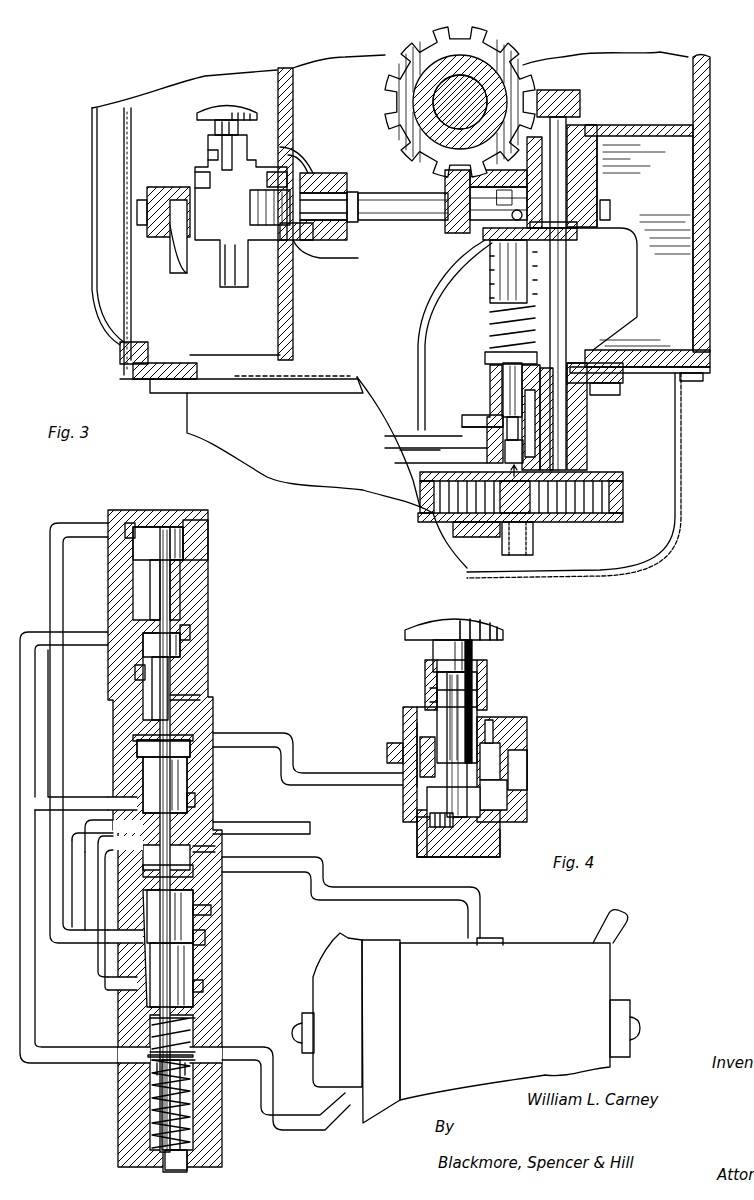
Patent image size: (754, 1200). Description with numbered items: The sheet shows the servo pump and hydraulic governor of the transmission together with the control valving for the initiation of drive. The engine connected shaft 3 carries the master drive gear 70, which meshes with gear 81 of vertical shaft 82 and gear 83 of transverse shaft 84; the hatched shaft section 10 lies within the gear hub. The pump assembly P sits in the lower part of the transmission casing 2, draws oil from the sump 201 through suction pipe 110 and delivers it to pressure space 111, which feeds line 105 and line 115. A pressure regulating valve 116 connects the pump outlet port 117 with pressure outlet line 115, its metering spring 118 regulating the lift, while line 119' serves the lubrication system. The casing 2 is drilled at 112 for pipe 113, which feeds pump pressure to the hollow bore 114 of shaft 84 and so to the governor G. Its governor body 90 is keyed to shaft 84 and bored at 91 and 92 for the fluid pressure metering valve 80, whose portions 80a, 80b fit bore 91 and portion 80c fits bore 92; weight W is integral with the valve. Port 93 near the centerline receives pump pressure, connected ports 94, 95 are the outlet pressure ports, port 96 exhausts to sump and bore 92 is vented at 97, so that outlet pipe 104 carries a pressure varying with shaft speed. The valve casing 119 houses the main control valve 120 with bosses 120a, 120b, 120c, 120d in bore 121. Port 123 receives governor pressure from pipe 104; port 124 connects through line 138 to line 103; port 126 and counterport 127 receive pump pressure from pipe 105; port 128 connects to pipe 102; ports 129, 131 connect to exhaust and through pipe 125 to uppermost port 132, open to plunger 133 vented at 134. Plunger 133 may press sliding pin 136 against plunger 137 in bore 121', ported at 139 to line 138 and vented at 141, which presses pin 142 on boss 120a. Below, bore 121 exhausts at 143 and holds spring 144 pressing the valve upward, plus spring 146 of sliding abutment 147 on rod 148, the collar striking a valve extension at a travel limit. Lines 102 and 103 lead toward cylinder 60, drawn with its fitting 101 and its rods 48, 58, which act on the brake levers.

In FIG. 3, the transmission casing 2 is at (700, 165).
In FIG. 3, the engine connected shaft 3 is at (420, 88).
In FIG. 3, the shaft 10 is at (445, 115).
In FIG. 3, the master drive gear 70 is at (480, 38).
In FIG. 3, the fluid pressure metering valve 80 is at (232, 105).
In FIG. 4, the fluid pressure metering valve 80 is at (470, 823).
In FIG. 3, the valve portion 80a is at (237, 128).
In FIG. 4, the valve portion 80a is at (443, 655).
In FIG. 4, the valve portion 80b is at (445, 722).
In FIG. 4, the valve portion 80c is at (440, 808).
In FIG. 3, the gear 81 is at (560, 100).
In FIG. 3, the vertical shaft 82 is at (566, 130).
In FIG. 3, the gear 83 is at (455, 234).
In FIG. 3, the transverse shaft 84 is at (382, 207).
In FIG. 3, the governor body 90 is at (208, 143).
In FIG. 4, the governor body 90 is at (515, 740).
In FIG. 4, the bore 91 is at (475, 662).
In FIG. 4, the bore 92 is at (467, 808).
In FIG. 4, the port 93 is at (492, 745).
In FIG. 4, the outlet pressure port 94 is at (489, 720).
In FIG. 4, the outlet pressure port 95 is at (520, 785).
In FIG. 4, the exhaust port 96 is at (427, 690).
In FIG. 4, the vent 97 is at (440, 848).
In FIG. 4, the motor terminal 101 is at (618, 930).
In FIG. 4, the pipe 102 is at (290, 858).
In FIG. 4, the line 103 is at (285, 1118).
In FIG. 3, the outlet pipe 104 is at (178, 255).
In FIG. 4, the outlet pipe 104 is at (290, 733).
In FIG. 3, the line 105 is at (400, 440).
In FIG. 4, the line 105 is at (287, 822).
In FIG. 3, the suction pipe 110 is at (525, 535).
In FIG. 3, the pressure space 111 is at (497, 460).
In FIG. 3, the drilled passage 112 is at (555, 232).
In FIG. 3, the pipe 113 is at (470, 262).
In FIG. 3, the hollow bore 114 is at (325, 172).
In FIG. 4, the hollow bore 114 is at (537, 777).
In FIG. 3, the pressure outlet line 115 is at (441, 460).
In FIG. 3, the pressure regulating valve 116 is at (505, 381).
In FIG. 3, the pump outlet port 117 is at (503, 432).
In FIG. 3, the metering spring 118 is at (500, 311).
In FIG. 4, the valve casing 119 is at (177, 841).
In FIG. 3, the line 119' is at (473, 409).
In FIG. 4, the main control valve 120 is at (150, 781).
In FIG. 4, the boss 120a is at (185, 748).
In FIG. 4, the boss 120b is at (190, 770).
In FIG. 4, the boss 120c is at (195, 893).
In FIG. 4, the boss 120d is at (180, 970).
In FIG. 4, the bore 121 is at (118, 514).
In FIG. 4, the bore 121' is at (112, 681).
In FIG. 4, the port 123 is at (190, 737).
In FIG. 4, the port 124 is at (197, 800).
In FIG. 4, the pipe 125 is at (52, 523).
In FIG. 4, the port 126 is at (195, 846).
In FIG. 4, the counterport 127 is at (200, 986).
In FIG. 4, the port 128 is at (195, 870).
In FIG. 4, the port 129 is at (210, 912).
In FIG. 4, the port 131 is at (197, 937).
In FIG. 4, the uppermost port 132 is at (185, 530).
In FIG. 4, the plunger 133 is at (155, 540).
In FIG. 4, the vent 134 is at (175, 598).
In FIG. 4, the sliding pin 136 is at (168, 580).
In FIG. 4, the plunger 137 is at (178, 650).
In FIG. 4, the line 138 is at (85, 640).
In FIG. 4, the port 139 is at (185, 635).
In FIG. 4, the vent 141 is at (172, 697).
In FIG. 4, the pin 142 is at (170, 672).
In FIG. 4, the exhaust port 143 is at (198, 1034).
In FIG. 4, the spring 144 is at (150, 1120).
In FIG. 4, the spring 146 is at (153, 1100).
In FIG. 4, the sliding abutment 147 is at (150, 1063).
In FIG. 4, the rod 148 is at (175, 1170).
In FIG. 3, the sump 201 is at (650, 532).
In FIG. 4, the rod 48 is at (302, 1020).
In FIG. 4, the rod 58 is at (630, 1012).
In FIG. 4, the cylinder 60 is at (425, 948).
In FIG. 4, the governor G is at (381, 748).
In FIG. 3, the pump assembly P is at (601, 441).
In FIG. 3, the weight W is at (197, 113).
In FIG. 4, the weight W is at (503, 633).